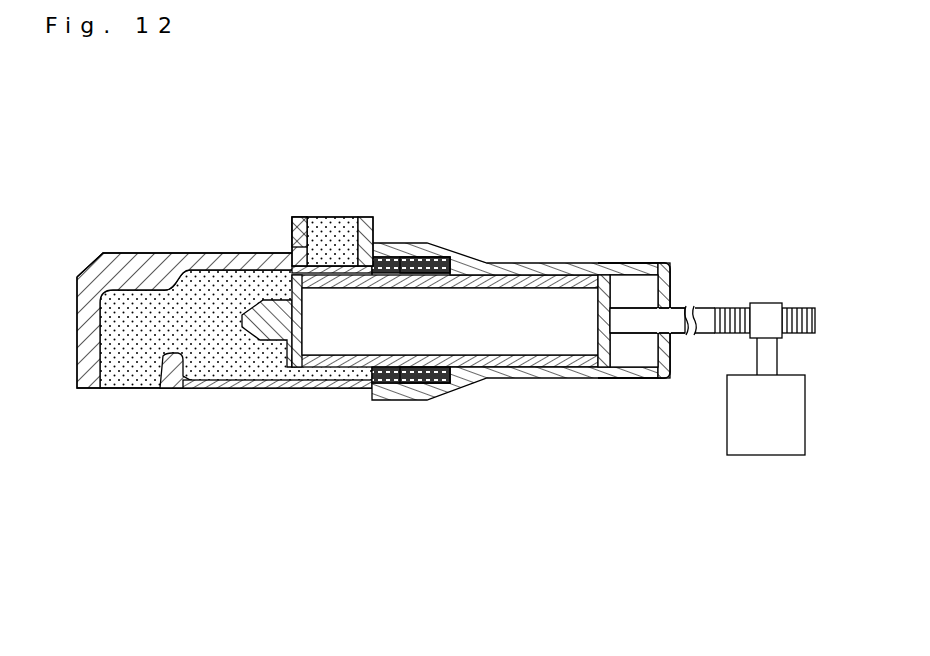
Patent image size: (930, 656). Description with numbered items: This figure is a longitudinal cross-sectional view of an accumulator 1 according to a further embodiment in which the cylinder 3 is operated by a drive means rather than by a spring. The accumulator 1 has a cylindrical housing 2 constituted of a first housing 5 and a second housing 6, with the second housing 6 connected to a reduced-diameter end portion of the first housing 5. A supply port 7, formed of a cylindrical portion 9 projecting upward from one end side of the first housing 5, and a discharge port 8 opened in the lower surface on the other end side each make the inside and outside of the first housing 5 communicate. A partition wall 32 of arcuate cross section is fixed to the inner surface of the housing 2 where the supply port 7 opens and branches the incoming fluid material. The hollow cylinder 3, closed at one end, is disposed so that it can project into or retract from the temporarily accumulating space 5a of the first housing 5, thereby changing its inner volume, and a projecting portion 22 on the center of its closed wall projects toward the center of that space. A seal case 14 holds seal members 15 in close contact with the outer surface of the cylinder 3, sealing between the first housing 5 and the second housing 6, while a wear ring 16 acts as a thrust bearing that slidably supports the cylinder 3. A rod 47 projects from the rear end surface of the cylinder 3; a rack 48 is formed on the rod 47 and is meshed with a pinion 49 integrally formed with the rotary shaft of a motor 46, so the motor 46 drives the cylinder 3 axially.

The accumulator 1 is at (555, 219).
The housing 2 is at (103, 252).
The cylinder 3 is at (512, 266).
The first housing 5 is at (145, 254).
The temporarily accumulating space 5a is at (207, 286).
The second housing 6 is at (610, 264).
The supply port 7 is at (313, 213).
The discharge port 8 is at (158, 388).
The cylindrical portion 9 is at (293, 242).
The seal case 14 is at (440, 253).
The seal member 15 is at (428, 262).
The wear ring 16 is at (375, 262).
The projecting portion 22 is at (266, 342).
The partition wall 32 is at (293, 236).
The motor 46 is at (770, 456).
The rod 47 is at (642, 325).
The rack 48 is at (727, 308).
The pinion 49 is at (772, 303).